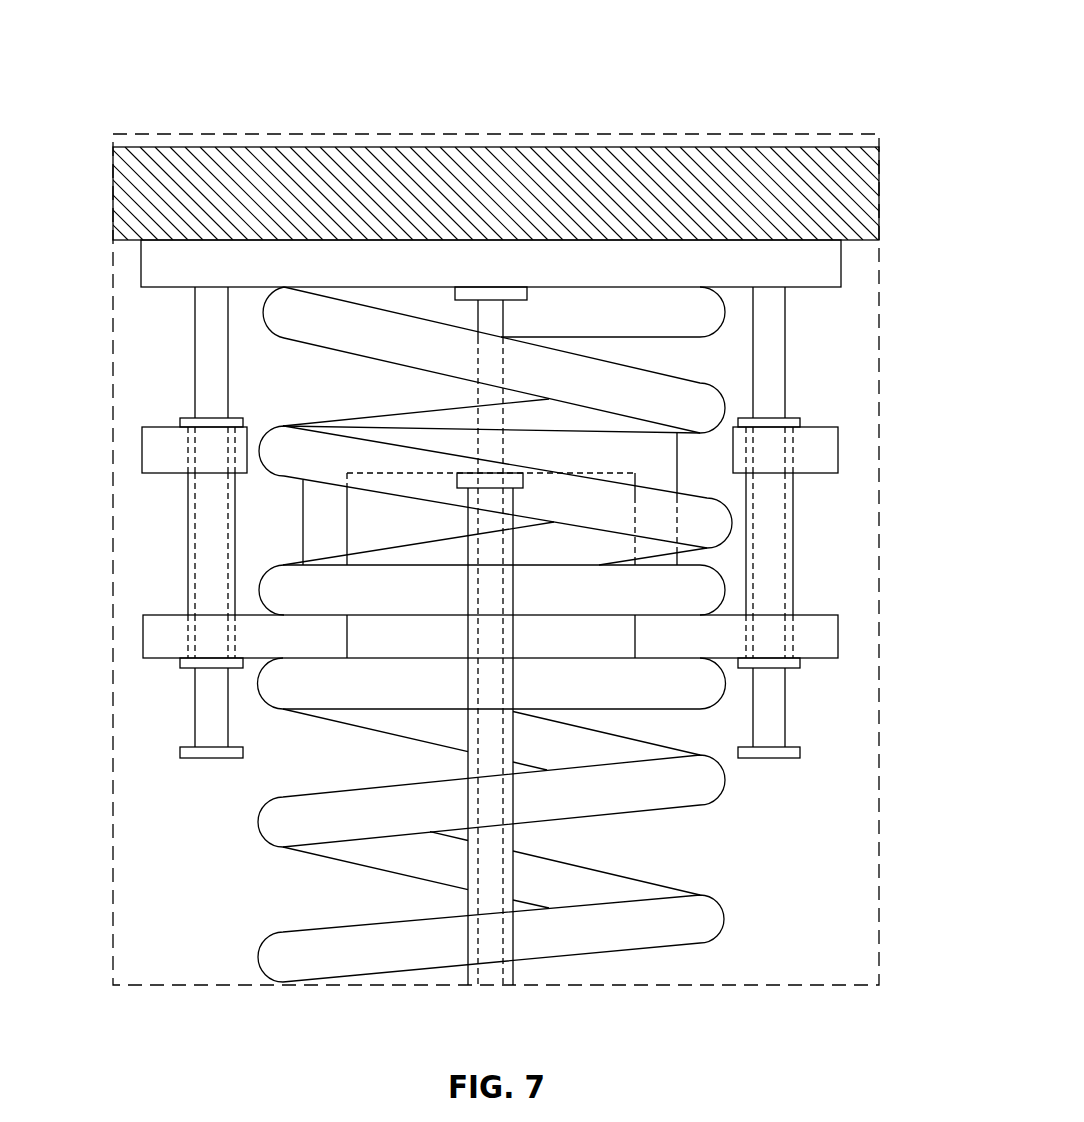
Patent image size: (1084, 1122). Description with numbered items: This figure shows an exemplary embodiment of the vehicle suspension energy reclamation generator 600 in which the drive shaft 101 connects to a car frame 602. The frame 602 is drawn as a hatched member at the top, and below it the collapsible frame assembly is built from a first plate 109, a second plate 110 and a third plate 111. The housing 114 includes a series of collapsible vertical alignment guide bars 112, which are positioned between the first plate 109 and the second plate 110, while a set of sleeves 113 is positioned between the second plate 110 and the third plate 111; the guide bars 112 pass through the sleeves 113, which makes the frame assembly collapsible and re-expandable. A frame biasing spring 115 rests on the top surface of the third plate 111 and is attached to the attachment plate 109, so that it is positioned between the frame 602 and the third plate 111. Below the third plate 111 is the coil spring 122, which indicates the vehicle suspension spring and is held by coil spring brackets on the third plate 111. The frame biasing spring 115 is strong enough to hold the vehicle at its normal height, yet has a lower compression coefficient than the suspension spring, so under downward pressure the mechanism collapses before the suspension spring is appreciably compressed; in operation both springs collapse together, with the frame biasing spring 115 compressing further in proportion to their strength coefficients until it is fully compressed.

The vehicle suspension energy reclamation generator 600 is at (140, 40).
The car frame 602 is at (823, 212).
The first plate 109 is at (167, 264).
The guide bars 112 is at (772, 330).
The second plate 110 is at (167, 450).
The sleeves 113 is at (187, 507).
The third plate 111 is at (167, 635).
The drive shaft 101 is at (490, 415).
The housing 114 is at (320, 525).
The frame biasing spring 115 is at (695, 405).
The coil spring 122 is at (693, 928).